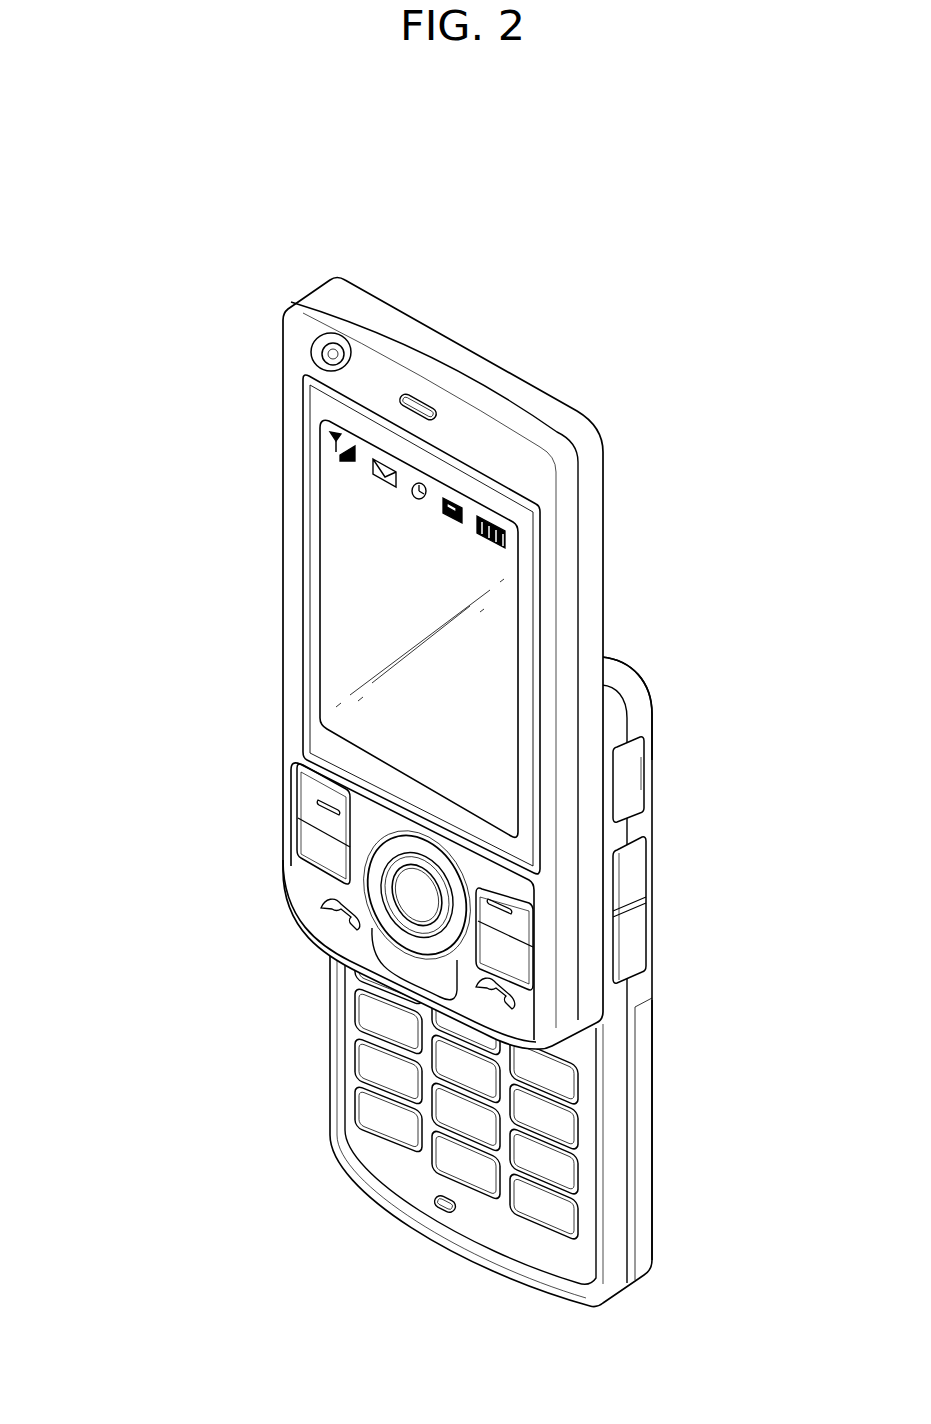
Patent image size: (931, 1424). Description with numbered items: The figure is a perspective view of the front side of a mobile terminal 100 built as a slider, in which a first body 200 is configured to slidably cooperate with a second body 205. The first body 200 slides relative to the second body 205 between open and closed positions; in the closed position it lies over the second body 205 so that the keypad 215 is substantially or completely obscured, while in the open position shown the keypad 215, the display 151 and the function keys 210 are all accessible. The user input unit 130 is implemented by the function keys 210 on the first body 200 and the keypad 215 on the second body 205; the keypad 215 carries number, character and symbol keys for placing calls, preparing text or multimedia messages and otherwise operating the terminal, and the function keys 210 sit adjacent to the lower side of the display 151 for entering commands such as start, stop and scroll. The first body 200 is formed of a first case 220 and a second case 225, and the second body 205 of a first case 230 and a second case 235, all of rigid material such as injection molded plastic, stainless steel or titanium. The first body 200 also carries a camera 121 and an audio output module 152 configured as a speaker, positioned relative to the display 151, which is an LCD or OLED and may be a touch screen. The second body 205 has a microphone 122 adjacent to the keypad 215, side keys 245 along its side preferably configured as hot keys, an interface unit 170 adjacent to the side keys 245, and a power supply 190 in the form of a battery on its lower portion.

The mobile terminal 100 is at (600, 337).
The camera 121 is at (333, 356).
The microphone 122 is at (447, 1212).
The user input unit 130 is at (178, 830).
The display 151 is at (338, 562).
The audio output module 152 is at (418, 398).
The interface unit 170 is at (633, 772).
The power supply 190 is at (643, 1115).
The first body 200 is at (247, 450).
The second body 205 is at (337, 1167).
The function keys 210 is at (315, 838).
The keypad 215 is at (362, 1098).
The first case 220 is at (571, 548).
The second case 225 is at (593, 502).
The first case 230 is at (615, 703).
The second case 235 is at (642, 732).
The side keys 245 is at (635, 940).